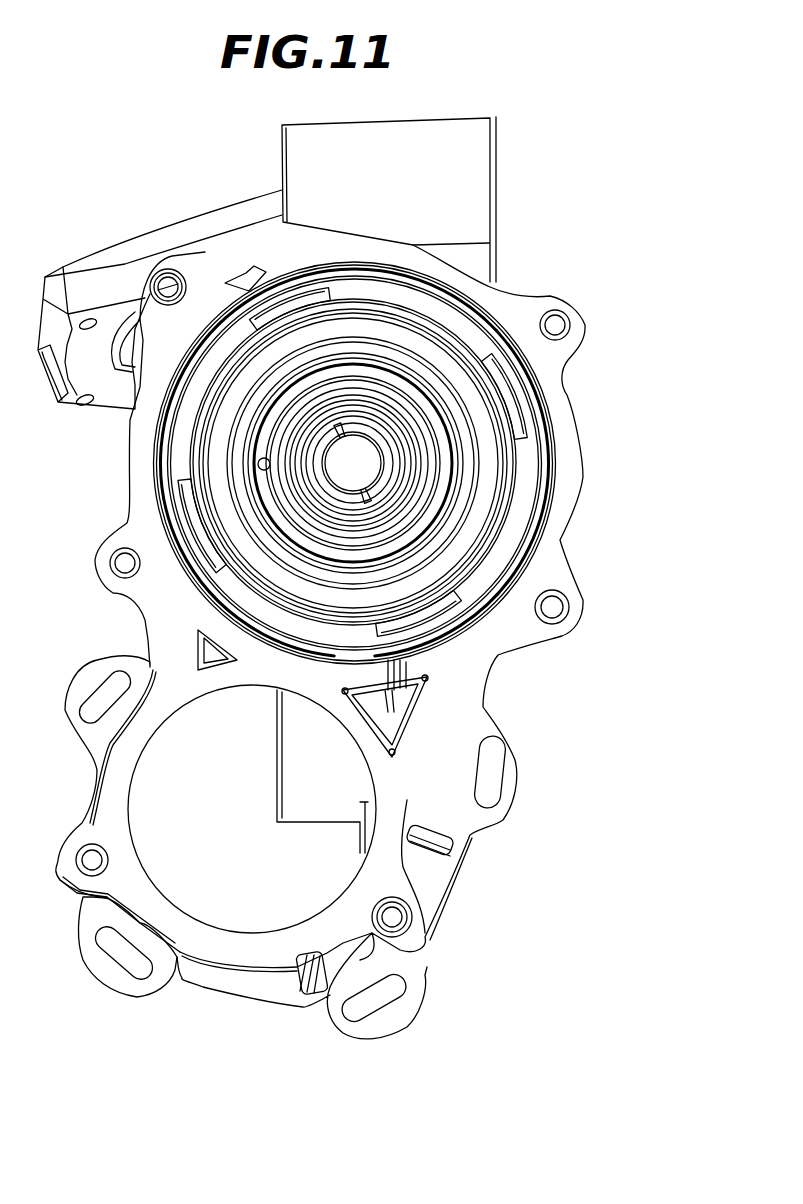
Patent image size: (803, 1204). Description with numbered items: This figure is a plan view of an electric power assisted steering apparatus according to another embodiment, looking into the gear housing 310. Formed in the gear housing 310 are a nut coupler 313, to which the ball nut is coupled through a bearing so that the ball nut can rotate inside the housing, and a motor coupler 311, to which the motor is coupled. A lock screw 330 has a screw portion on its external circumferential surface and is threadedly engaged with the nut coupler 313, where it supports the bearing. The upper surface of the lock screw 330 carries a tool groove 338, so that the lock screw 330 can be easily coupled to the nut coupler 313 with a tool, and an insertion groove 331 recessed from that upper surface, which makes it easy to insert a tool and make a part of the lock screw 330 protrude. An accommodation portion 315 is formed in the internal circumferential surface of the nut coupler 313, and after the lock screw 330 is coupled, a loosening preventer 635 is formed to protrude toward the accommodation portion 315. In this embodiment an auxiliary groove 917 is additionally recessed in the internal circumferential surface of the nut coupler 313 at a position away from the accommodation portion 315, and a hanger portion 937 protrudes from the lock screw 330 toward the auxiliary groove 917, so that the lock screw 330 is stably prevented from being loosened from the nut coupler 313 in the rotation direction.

The gear housing 310 is at (349, 578).
The motor coupler 311 is at (140, 828).
The nut coupler 313 is at (485, 320).
The accommodation portion 315 is at (420, 677).
The lock screw 330 is at (523, 467).
The insertion groove 331 is at (567, 477).
The tool groove 338 is at (507, 403).
The loosening preventer 635 is at (392, 667).
The auxiliary groove 917 is at (247, 290).
The hanger portion 937 is at (238, 288).